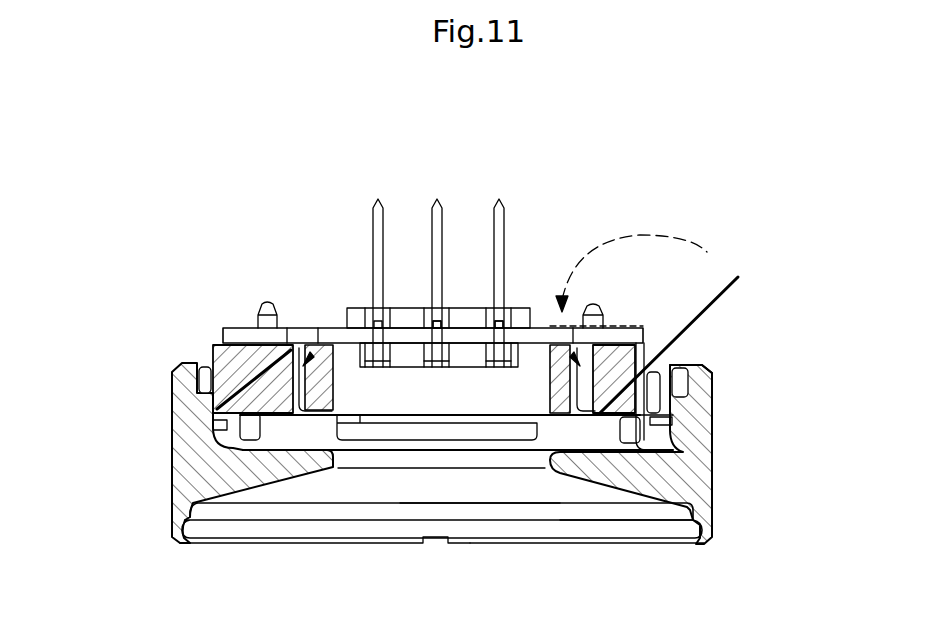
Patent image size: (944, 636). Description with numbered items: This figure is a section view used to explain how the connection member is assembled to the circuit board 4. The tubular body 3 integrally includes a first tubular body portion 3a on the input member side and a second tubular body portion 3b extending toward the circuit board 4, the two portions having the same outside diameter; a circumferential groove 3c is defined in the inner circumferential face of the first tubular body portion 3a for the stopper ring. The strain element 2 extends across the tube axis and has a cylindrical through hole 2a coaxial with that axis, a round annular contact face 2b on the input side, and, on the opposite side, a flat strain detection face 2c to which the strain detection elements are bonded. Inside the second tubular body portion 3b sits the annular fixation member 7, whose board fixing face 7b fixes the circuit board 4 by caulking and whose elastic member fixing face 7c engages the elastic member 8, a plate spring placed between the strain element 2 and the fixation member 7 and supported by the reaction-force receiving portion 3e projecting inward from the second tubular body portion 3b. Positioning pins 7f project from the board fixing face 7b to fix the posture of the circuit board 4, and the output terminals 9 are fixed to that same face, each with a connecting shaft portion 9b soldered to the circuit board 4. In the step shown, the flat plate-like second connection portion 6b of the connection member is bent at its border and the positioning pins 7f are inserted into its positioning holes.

The strain element 2 is at (270, 488).
The cylindrical through hole 2a is at (492, 465).
The contact face 2b is at (620, 488).
The strain detection face 2c is at (297, 450).
The tubular body 3 is at (730, 491).
The first tubular body portion 3a is at (680, 548).
The second tubular body portion 3b is at (698, 363).
The circumferential groove 3c is at (358, 532).
The reaction-force receiving portion 3e is at (670, 413).
The circuit board 4 is at (235, 322).
The second connection portion 6b is at (738, 277).
The fixation member 7 is at (217, 340).
The board fixing face 7b is at (288, 328).
The elastic member fixing face 7c is at (232, 446).
The positioning pins 7f is at (267, 300).
The elastic member 8 is at (600, 418).
The output terminal 9 is at (345, 180).
The connecting shaft portion 9b is at (497, 326).